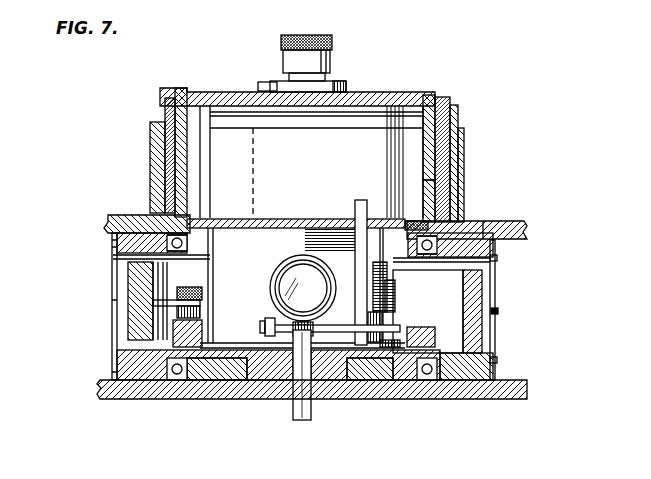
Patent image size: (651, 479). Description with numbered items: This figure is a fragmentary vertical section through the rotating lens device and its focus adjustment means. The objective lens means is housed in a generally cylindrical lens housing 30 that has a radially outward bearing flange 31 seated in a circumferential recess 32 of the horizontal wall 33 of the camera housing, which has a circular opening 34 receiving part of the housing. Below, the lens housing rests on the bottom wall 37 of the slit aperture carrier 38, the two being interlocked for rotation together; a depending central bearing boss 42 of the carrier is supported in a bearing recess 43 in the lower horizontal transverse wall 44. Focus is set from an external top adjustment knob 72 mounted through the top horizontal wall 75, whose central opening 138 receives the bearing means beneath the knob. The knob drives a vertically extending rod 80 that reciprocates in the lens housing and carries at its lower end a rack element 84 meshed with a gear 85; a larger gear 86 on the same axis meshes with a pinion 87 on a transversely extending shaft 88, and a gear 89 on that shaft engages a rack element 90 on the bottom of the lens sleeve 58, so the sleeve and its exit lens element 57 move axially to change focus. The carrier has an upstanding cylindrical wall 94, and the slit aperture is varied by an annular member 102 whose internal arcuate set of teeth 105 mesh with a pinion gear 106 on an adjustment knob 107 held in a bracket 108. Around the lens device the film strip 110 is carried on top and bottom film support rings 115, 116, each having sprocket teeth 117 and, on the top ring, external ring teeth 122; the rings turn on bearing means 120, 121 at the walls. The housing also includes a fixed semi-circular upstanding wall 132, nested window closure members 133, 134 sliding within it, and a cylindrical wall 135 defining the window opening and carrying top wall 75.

The top adjustment knob 72 is at (337, 43).
The top horizontal wall 75 is at (395, 96).
The central opening 138 is at (272, 82).
The cylindrical wall 135 is at (452, 112).
The window closure member 134 is at (438, 143).
The window closure member 133 is at (447, 167).
The semi-circular upstanding wall 132 is at (150, 146).
The bearing flange 31 is at (182, 212).
The circumferential recess 32 is at (168, 206).
The bearing means 120 is at (205, 236).
The lens housing 30 is at (311, 162).
The vertically extending rod 80 is at (357, 233).
The circular opening 34 is at (420, 213).
The top film support ring 115 is at (484, 222).
The horizontal wall 33 is at (525, 228).
The ring teeth 122 is at (495, 243).
The sprocket teeth 117 is at (497, 258).
The lens sleeve 58 is at (292, 262).
The exit lens element 57 is at (303, 288).
The larger gear 86 is at (354, 270).
The rack element 84 is at (393, 283).
The gear 85 is at (396, 300).
The pinion 87 is at (382, 336).
The cylindrical wall 94 is at (470, 290).
The slit aperture carrier 38 is at (498, 311).
The adjustment knob 107 is at (182, 288).
The bracket 108 is at (162, 296).
The pinion gear 106 is at (177, 308).
The internal arcuate set of teeth 105 is at (173, 320).
The annular member 102 is at (128, 333).
The rack element 90 is at (290, 322).
The transversely extending shaft 88 is at (339, 331).
The film strip 110 is at (502, 341).
The bearing means 121 is at (173, 380).
The bearing recess 43 is at (263, 372).
The gear 89 is at (293, 336).
The central bearing boss 42 is at (313, 400).
The bottom wall 37 is at (387, 378).
The bottom film support ring 116 is at (460, 378).
The horizontal transverse wall 44 is at (487, 400).